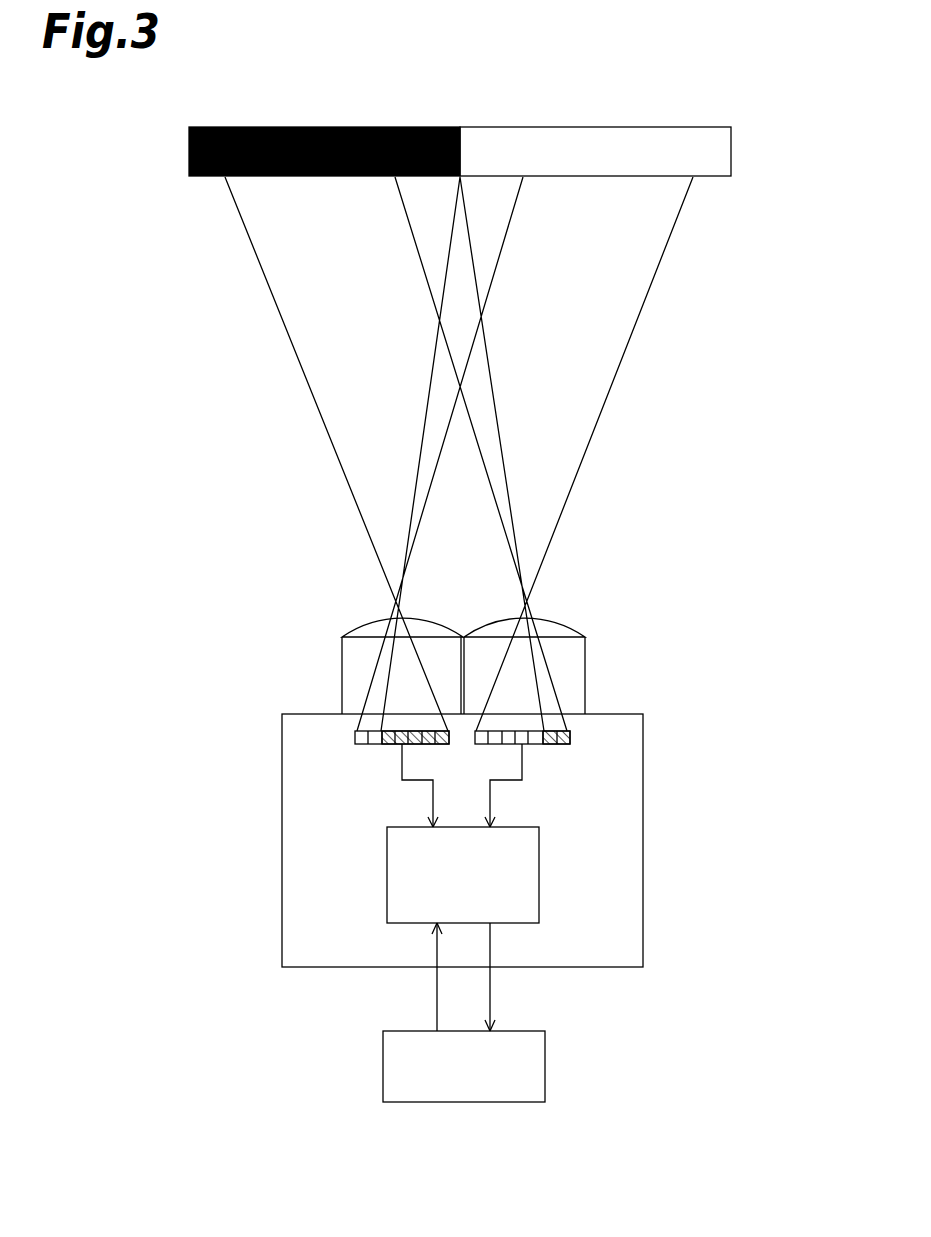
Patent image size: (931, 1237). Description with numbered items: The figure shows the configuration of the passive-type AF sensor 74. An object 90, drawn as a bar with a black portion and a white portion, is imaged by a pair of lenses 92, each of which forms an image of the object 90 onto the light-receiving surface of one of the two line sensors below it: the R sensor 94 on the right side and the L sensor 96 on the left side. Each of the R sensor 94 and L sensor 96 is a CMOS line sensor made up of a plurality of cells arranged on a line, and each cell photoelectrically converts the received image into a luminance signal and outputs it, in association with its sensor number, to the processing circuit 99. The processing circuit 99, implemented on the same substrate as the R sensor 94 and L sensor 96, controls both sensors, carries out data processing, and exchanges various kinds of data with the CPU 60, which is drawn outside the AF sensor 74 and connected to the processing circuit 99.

The object 90 is at (757, 133).
The lenses 92 is at (368, 627).
The AF sensor 74 is at (655, 892).
The L sensor 96 is at (352, 742).
The R sensor 94 is at (577, 739).
The processing circuit 99 is at (387, 897).
The CPU 60 is at (545, 1058).